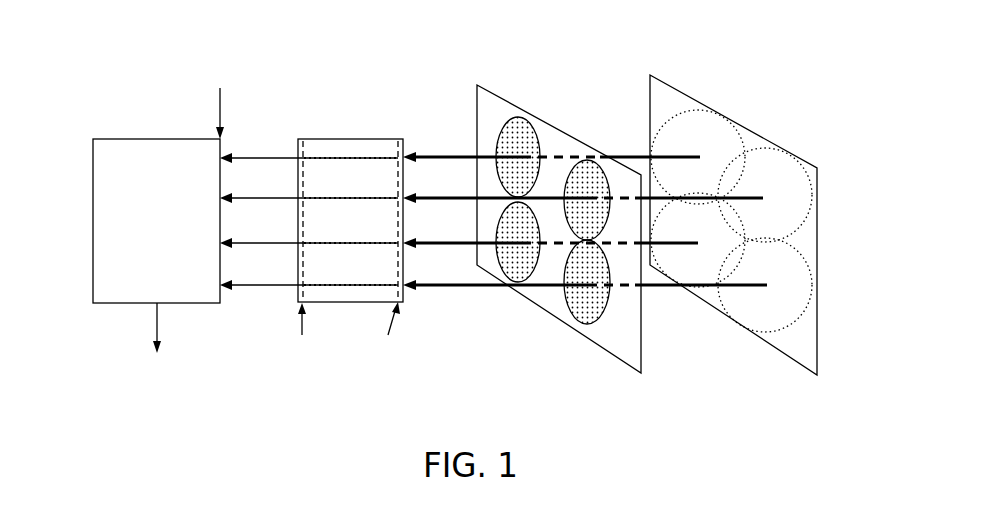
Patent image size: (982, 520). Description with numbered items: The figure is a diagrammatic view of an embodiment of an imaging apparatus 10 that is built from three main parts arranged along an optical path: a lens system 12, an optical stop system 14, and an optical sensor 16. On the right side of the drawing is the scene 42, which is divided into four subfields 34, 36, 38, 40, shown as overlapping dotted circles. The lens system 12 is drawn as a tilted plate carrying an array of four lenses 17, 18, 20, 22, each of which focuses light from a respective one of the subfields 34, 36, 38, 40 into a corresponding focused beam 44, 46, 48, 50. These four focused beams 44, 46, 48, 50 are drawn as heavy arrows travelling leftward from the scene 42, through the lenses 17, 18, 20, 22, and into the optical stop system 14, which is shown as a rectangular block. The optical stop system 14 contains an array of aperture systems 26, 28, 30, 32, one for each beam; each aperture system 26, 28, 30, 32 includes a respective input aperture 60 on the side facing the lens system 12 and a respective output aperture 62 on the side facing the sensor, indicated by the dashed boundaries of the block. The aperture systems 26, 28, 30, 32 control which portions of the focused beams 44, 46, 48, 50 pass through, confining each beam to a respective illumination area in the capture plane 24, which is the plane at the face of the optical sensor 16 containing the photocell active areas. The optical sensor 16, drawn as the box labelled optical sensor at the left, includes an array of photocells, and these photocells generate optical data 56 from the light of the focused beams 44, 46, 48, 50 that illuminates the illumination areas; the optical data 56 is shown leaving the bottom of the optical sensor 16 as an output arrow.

The imaging apparatus 10 is at (81, 29).
The lens system 12 is at (642, 350).
The optical stop system 14 is at (366, 138).
The optical sensor 16 is at (157, 138).
The lens 17 is at (521, 116).
The lens 18 is at (590, 167).
The lens 20 is at (580, 320).
The lens 22 is at (514, 277).
The capture plane 24 is at (234, 110).
The aperture system 26 is at (316, 146).
The aperture system 28 is at (316, 188).
The aperture system 30 is at (316, 231).
The aperture system 32 is at (316, 273).
The subfield 34 is at (698, 157).
The subfield 36 is at (765, 195).
The subfield 38 is at (765, 285).
The subfield 40 is at (698, 240).
The scene 42 is at (818, 240).
The focused beam 44 is at (458, 153).
The focused beam 46 is at (462, 193).
The focused beam 48 is at (460, 240).
The focused beam 50 is at (460, 282).
The optical data 56 is at (157, 320).
The input aperture 60 is at (376, 244).
The output aperture 62 is at (286, 244).